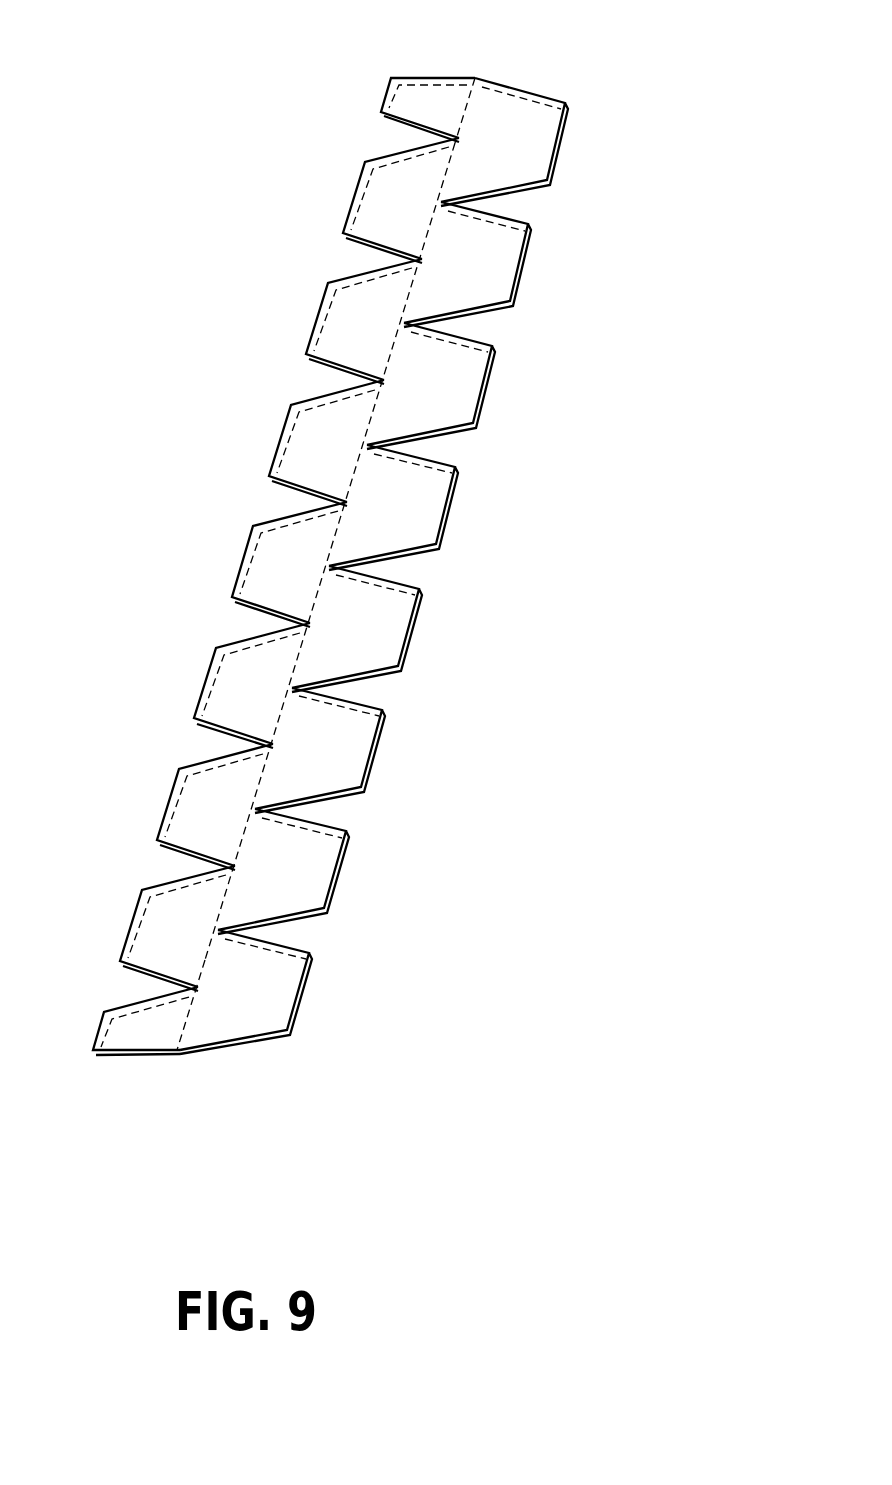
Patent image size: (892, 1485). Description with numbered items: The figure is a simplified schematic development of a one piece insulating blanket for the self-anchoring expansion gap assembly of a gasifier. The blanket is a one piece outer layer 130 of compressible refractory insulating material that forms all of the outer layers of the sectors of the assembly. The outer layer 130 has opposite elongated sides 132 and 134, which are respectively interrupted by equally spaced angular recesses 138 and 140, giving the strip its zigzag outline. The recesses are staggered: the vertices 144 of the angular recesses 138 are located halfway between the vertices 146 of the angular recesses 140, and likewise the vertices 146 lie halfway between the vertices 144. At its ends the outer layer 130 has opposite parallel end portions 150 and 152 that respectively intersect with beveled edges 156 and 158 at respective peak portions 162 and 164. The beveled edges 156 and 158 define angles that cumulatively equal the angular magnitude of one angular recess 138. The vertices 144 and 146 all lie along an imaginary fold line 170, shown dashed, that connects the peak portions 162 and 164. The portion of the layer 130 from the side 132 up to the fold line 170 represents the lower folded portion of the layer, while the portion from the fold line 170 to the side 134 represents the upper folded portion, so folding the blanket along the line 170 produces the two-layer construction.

The one piece outer layer 130 is at (603, 84).
The elongated side 132 is at (458, 495).
The elongated side 134 is at (245, 558).
The angular recess 138 is at (383, 695).
The angular recess 140 is at (198, 745).
The vertex 144 is at (318, 680).
The vertex 146 is at (421, 256).
The end portion 150 is at (410, 78).
The end portion 152 is at (122, 1055).
The beveled edge 156 is at (535, 90).
The beveled edge 158 is at (247, 1038).
The peak portion 162 is at (473, 78).
The peak portion 164 is at (182, 1057).
The imaginary fold line 170 is at (390, 348).